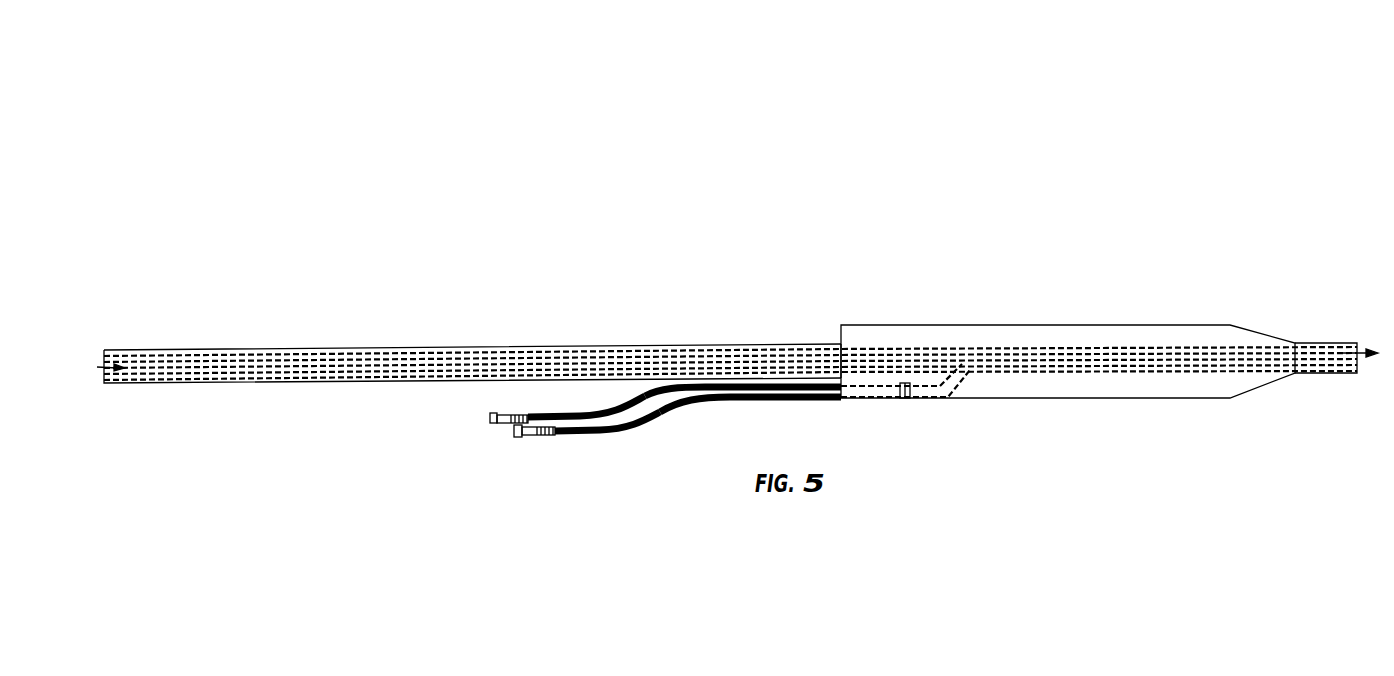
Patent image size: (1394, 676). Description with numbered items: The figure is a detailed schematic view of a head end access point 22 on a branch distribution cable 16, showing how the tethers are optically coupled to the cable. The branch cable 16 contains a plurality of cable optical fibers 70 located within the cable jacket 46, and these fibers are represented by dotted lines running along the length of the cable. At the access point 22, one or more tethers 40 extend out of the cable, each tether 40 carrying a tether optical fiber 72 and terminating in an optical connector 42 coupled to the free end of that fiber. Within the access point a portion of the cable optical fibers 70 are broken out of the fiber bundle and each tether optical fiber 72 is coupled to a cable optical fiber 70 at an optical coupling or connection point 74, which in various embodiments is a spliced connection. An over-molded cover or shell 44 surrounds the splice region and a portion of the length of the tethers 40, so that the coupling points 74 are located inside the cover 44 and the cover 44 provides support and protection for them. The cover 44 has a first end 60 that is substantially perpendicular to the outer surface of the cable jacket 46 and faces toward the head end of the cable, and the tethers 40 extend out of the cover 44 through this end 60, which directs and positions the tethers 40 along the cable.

The branch distribution cable 16 is at (1320, 342).
The head-end access point 22 is at (953, 204).
The tether 40 is at (657, 410).
The optical connector 42 is at (528, 425).
The over-molded cover 44 is at (1106, 324).
The cable jacket 46 is at (398, 345).
The first end 60 is at (839, 344).
The cable optical fiber 70 is at (204, 378).
The tether optical fiber 72 is at (602, 428).
The optical coupling point 74 is at (902, 398).